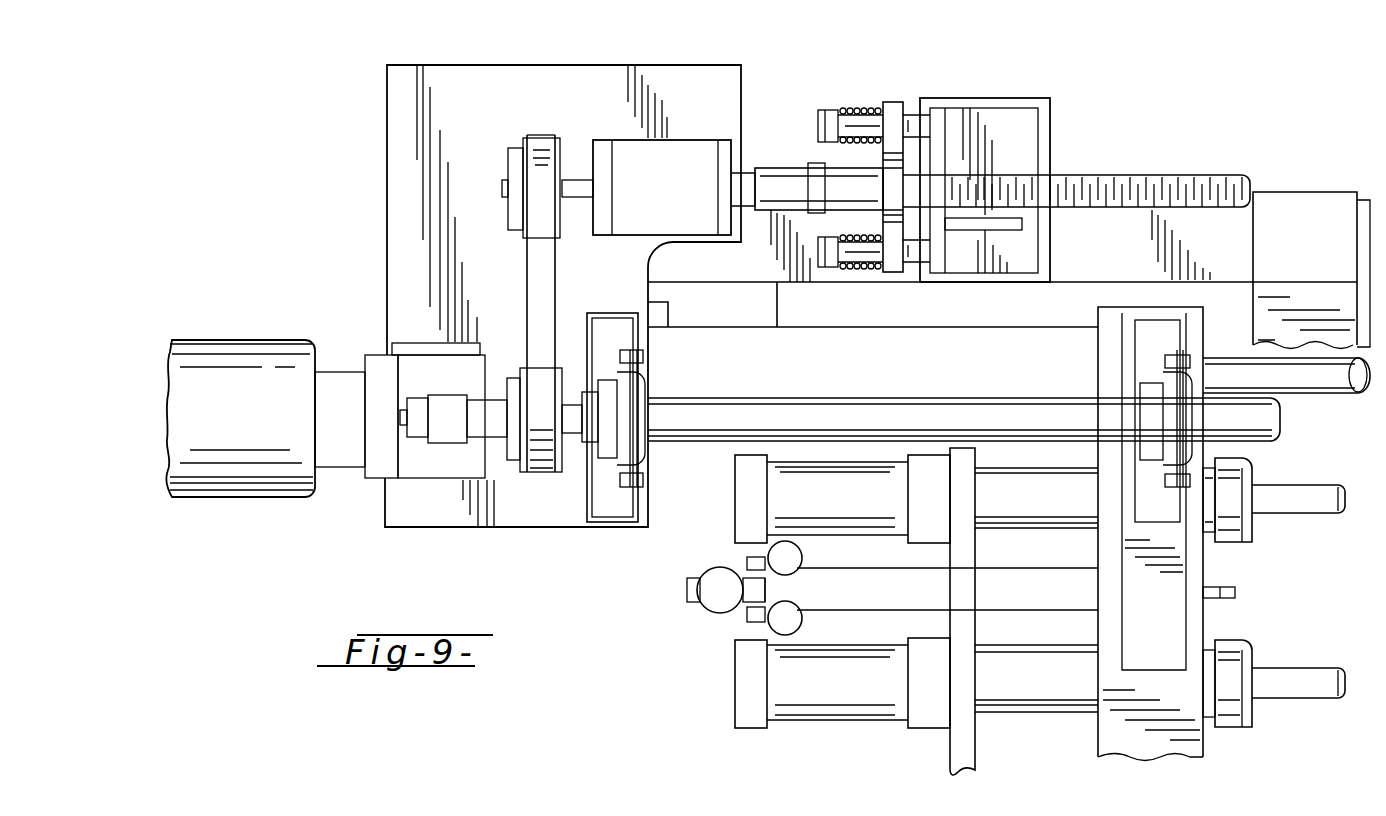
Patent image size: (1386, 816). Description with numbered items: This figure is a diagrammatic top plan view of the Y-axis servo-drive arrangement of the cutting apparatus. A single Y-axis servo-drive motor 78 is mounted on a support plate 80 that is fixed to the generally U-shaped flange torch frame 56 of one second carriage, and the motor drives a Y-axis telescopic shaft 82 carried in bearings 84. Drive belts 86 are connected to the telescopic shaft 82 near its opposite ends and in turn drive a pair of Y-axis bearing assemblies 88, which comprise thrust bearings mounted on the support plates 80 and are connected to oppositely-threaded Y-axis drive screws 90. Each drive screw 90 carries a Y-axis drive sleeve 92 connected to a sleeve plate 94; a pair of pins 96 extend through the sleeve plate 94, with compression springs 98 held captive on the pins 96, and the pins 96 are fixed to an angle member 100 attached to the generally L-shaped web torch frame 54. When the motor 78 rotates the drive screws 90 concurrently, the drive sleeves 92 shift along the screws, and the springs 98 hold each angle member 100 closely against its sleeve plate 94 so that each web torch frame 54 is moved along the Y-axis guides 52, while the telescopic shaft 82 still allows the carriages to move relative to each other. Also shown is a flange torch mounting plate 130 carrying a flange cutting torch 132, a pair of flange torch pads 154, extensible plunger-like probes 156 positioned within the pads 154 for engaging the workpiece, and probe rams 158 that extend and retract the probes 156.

The Y-axis guides 52 is at (1323, 390).
The web torch frame 54 is at (1292, 222).
The flange torch frame 56 is at (1024, 364).
The Y-axis servo-drive motor 78 is at (262, 352).
The support plate 80 is at (471, 97).
The Y-axis telescopic shaft 82 is at (822, 414).
The bearings 84 is at (645, 383).
The drive belts 86 is at (540, 292).
The Y-axis bearing assembly 88 is at (632, 158).
The Y-axis drive screw 90 is at (1078, 192).
The Y-axis drive sleeve 92 is at (848, 181).
The sleeve plate 94 is at (895, 105).
The pins 96 is at (862, 126).
The compression springs 98 is at (846, 111).
The angle member 100 is at (990, 128).
The flange torch mounting plate 130 is at (963, 745).
The flange cutting torch 132 is at (1237, 592).
The flange torch pads 154 is at (1245, 538).
The probes 156 is at (1318, 508).
The probe rams 158 is at (755, 470).